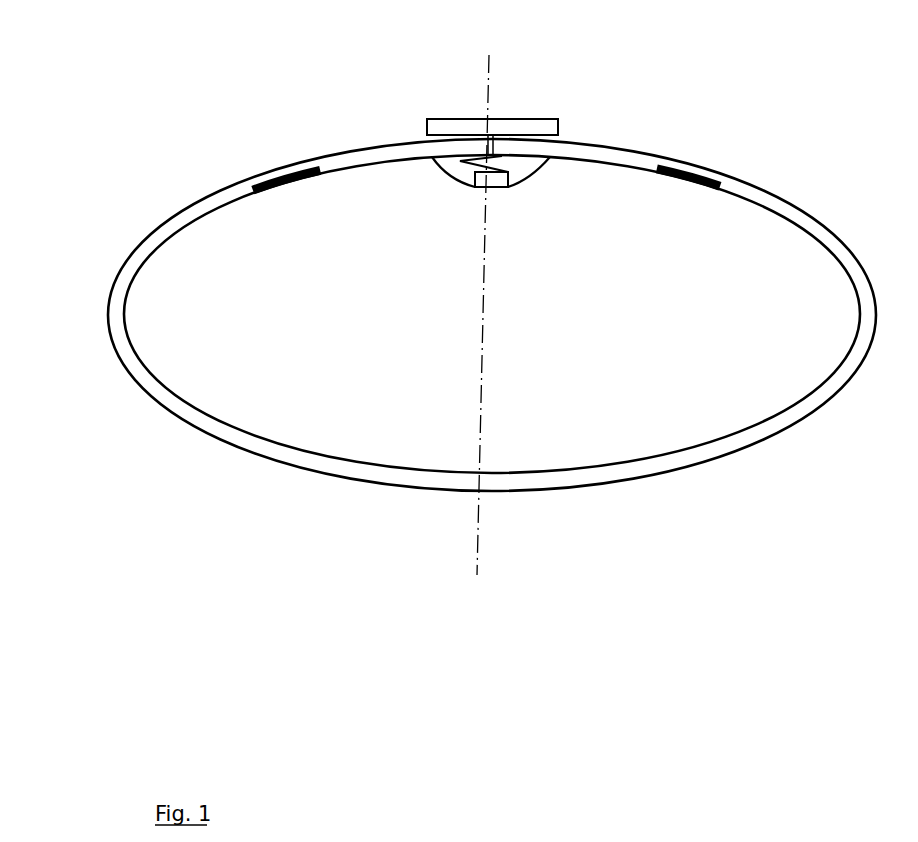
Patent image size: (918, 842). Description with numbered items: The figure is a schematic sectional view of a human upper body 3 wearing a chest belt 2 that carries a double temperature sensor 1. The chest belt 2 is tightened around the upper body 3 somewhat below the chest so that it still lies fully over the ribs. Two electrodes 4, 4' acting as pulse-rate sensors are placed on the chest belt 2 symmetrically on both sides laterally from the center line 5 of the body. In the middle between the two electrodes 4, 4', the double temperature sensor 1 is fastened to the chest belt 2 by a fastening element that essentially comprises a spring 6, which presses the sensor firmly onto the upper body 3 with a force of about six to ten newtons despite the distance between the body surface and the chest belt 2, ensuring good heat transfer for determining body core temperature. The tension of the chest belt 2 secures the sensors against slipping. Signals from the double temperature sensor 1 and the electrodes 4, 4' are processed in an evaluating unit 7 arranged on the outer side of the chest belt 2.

The double temperature sensor 1 is at (476, 239).
The chest belt 2 is at (448, 293).
The upper body 3 is at (177, 425).
The electrode 4 is at (713, 102).
The electrode 4' is at (236, 117).
The center line 5 is at (410, 315).
The spring 6 is at (521, 91).
The evaluating unit 7 is at (431, 82).